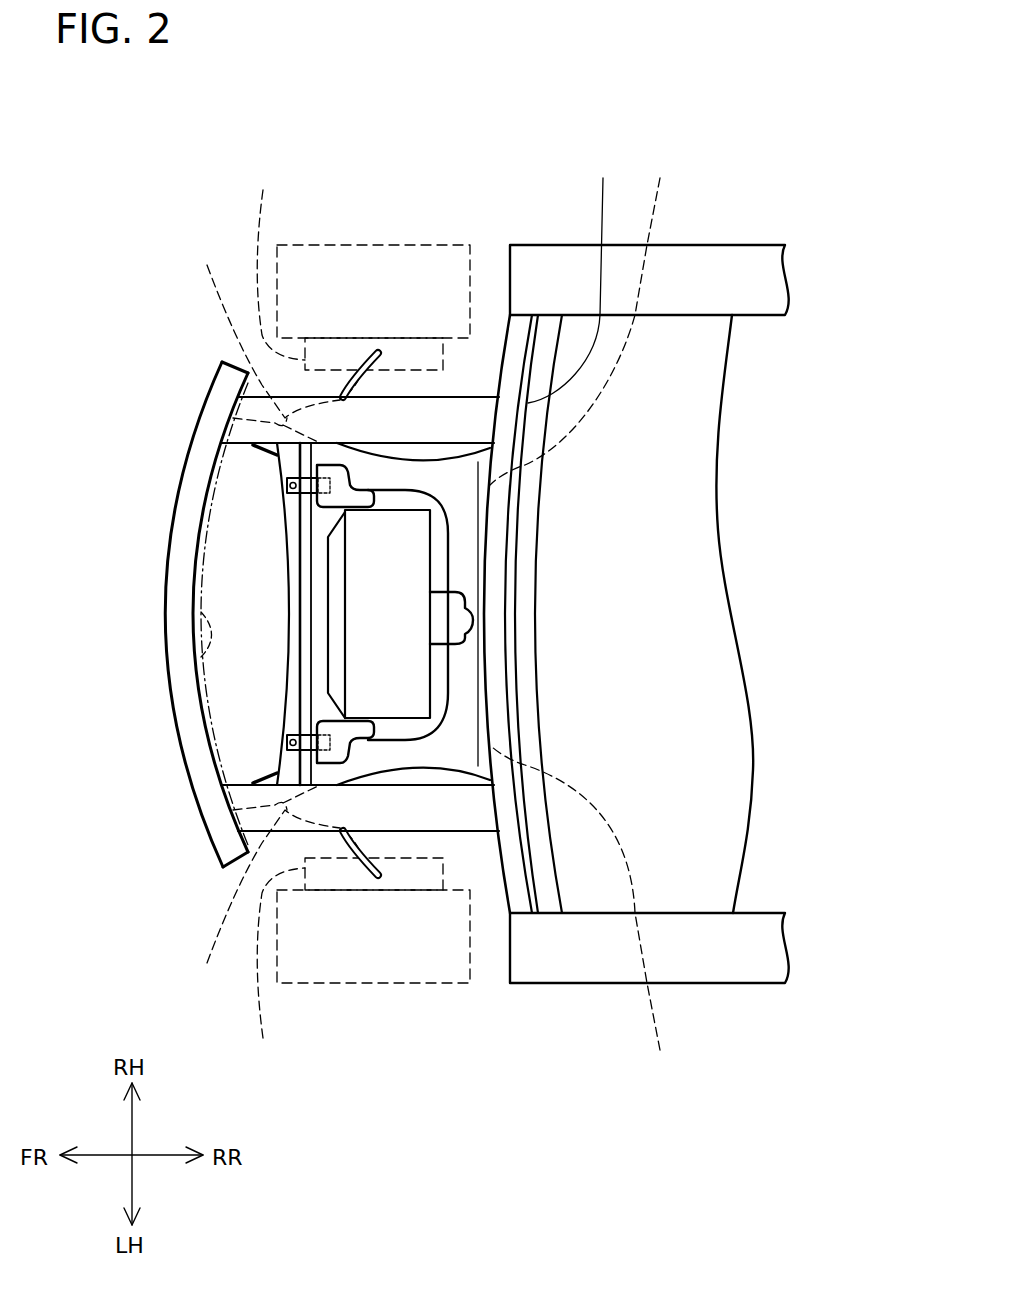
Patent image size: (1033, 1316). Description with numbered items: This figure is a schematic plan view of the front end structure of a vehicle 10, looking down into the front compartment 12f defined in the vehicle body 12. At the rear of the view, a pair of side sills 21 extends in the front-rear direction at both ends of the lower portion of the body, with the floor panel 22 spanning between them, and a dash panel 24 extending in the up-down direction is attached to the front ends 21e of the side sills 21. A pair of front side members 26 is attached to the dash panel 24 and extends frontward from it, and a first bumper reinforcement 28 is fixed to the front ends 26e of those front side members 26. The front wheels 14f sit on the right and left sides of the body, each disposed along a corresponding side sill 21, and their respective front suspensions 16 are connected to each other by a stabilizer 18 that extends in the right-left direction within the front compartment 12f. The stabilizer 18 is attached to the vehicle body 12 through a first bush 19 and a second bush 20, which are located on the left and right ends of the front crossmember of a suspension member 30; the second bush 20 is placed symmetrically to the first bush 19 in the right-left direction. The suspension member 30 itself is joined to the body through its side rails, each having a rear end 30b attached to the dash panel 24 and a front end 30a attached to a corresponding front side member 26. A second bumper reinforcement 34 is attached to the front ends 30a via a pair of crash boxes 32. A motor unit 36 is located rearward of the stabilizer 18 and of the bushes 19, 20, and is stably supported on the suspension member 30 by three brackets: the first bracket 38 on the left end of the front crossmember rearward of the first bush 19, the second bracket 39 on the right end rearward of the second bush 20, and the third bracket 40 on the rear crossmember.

The vehicle 10 is at (817, 100).
The vehicle body 12 is at (815, 213).
The front compartment 12f is at (199, 190).
The front wheels 14f is at (365, 243).
The front suspensions 16 is at (312, 616).
The stabilizer 18 is at (300, 570).
The first bush 19 is at (290, 748).
The second bush 20 is at (283, 478).
The side sills 21 is at (690, 245).
The front ends of side sills 21e is at (528, 245).
The floor panel 22 is at (720, 763).
The dash panel 24 is at (575, 277).
The front side members 26 is at (482, 397).
The front ends of front side members 26e is at (250, 372).
The first bumper reinforcement 28 is at (200, 420).
The suspension member 30 is at (497, 525).
The front end of side rail 30a is at (272, 617).
The rear end of side rail 30b is at (663, 616).
The crash boxes 32 is at (258, 457).
The second bumper reinforcement 34 is at (200, 612).
The motor unit 36 is at (432, 661).
The first bracket 38 is at (300, 690).
The second bracket 39 is at (292, 538).
The third bracket 40 is at (467, 597).